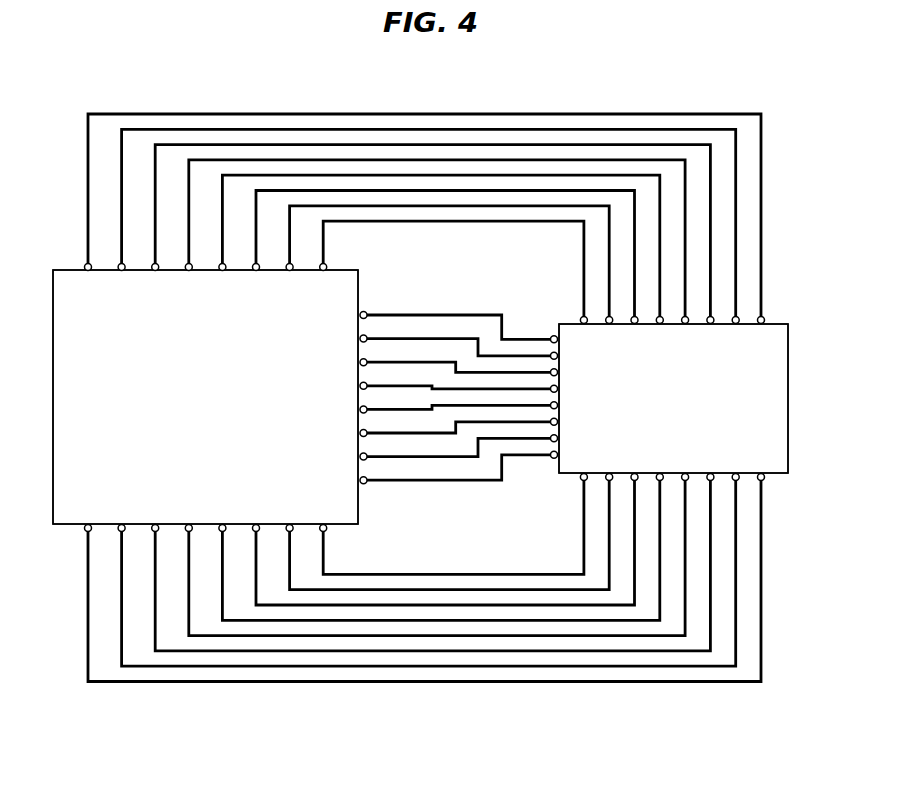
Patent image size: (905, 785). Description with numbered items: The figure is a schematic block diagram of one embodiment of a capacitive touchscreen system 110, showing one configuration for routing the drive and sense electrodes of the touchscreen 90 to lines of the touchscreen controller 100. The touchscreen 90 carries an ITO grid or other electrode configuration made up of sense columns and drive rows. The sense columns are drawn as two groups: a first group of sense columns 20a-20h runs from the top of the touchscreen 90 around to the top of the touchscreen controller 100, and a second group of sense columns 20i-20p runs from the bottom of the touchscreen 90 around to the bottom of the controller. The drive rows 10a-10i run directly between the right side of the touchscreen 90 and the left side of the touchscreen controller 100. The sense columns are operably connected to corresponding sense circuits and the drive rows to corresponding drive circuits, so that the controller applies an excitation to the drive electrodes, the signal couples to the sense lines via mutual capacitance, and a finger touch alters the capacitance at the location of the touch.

The capacitive touchscreen system 110 is at (172, 74).
The touchscreen 90 is at (63, 270).
The touchscreen controller 100 is at (777, 324).
The sense columns 20a-20h is at (508, 83).
The sense columns 20i-20p is at (510, 694).
The drive rows 10a-10i is at (412, 283).